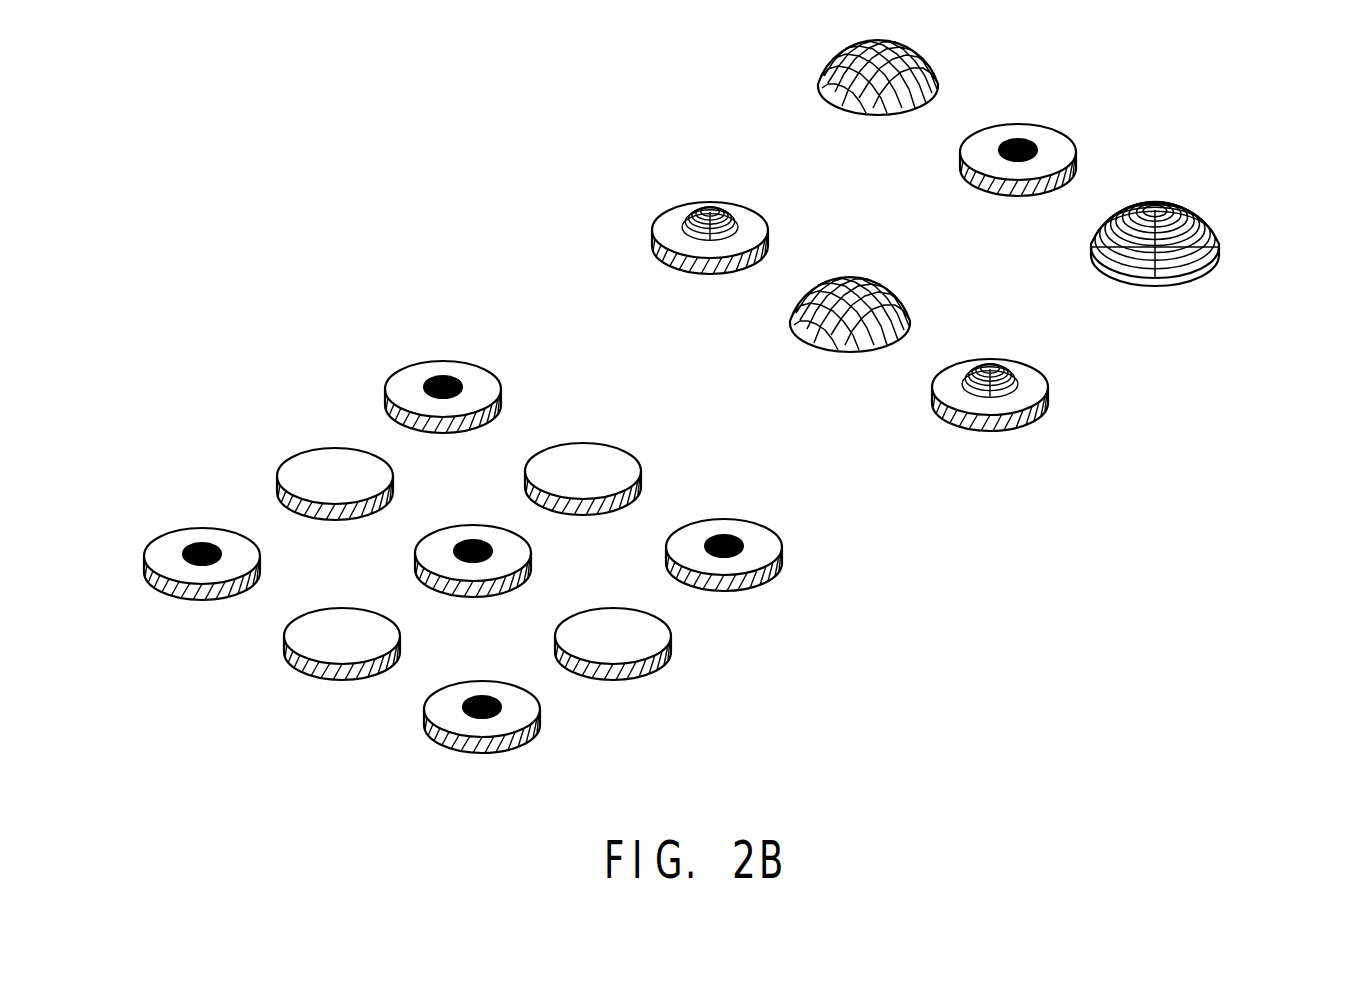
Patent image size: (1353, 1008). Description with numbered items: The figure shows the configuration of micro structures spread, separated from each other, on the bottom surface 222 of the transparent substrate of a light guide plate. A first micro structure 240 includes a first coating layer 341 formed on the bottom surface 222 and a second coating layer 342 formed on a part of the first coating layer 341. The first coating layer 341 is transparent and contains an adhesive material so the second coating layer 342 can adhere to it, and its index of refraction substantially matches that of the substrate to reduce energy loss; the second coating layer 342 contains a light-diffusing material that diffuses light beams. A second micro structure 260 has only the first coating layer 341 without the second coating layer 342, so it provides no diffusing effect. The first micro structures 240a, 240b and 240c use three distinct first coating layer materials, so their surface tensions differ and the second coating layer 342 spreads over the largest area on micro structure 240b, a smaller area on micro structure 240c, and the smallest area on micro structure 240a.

The bottom surface 222 is at (290, 211).
The first micro structure 240 is at (800, 532).
The first micro structure 240a is at (1070, 110).
The first micro structure 240b is at (1202, 173).
The first micro structure 240c is at (1030, 350).
The first coating layer 341 is at (752, 558).
The second coating layer 342 is at (727, 540).
The second micro structure 260 is at (642, 697).